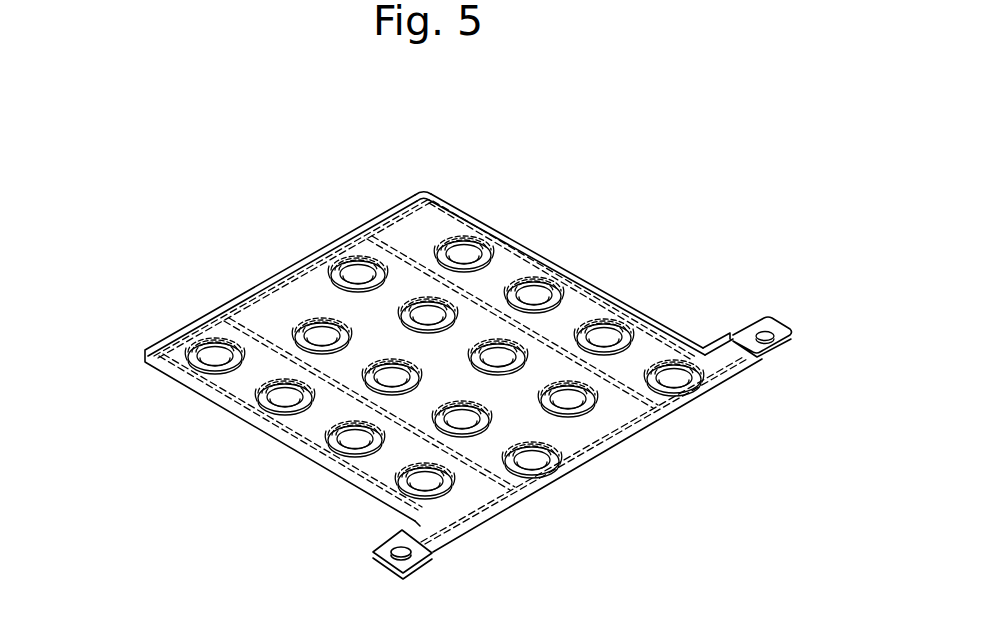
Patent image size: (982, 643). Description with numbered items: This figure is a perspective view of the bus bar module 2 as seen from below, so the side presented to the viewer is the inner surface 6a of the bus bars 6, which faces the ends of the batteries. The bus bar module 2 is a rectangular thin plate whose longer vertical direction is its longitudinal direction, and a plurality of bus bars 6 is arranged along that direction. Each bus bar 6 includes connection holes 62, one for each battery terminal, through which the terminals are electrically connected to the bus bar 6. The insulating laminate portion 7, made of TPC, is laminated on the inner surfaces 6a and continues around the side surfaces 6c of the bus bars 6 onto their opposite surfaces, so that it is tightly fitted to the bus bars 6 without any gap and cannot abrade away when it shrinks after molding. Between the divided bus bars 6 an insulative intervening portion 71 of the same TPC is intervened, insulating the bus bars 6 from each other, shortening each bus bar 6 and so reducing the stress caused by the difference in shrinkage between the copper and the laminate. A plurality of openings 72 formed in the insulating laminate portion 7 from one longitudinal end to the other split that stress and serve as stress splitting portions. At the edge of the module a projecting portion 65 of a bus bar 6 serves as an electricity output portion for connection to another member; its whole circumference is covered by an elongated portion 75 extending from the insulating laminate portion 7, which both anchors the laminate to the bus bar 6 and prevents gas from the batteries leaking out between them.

The bus bar module 2 is at (392, 203).
The bus bar 6 is at (143, 349).
The inner surface 6a is at (298, 423).
The side surface 6c is at (443, 192).
The insulating laminate portion 7 is at (553, 250).
The insulative intervening portion 71 is at (492, 307).
The opening 72 is at (192, 343).
The connection hole 62 is at (221, 352).
The elongated portion 75 is at (718, 338).
The projecting portion 65 is at (767, 327).